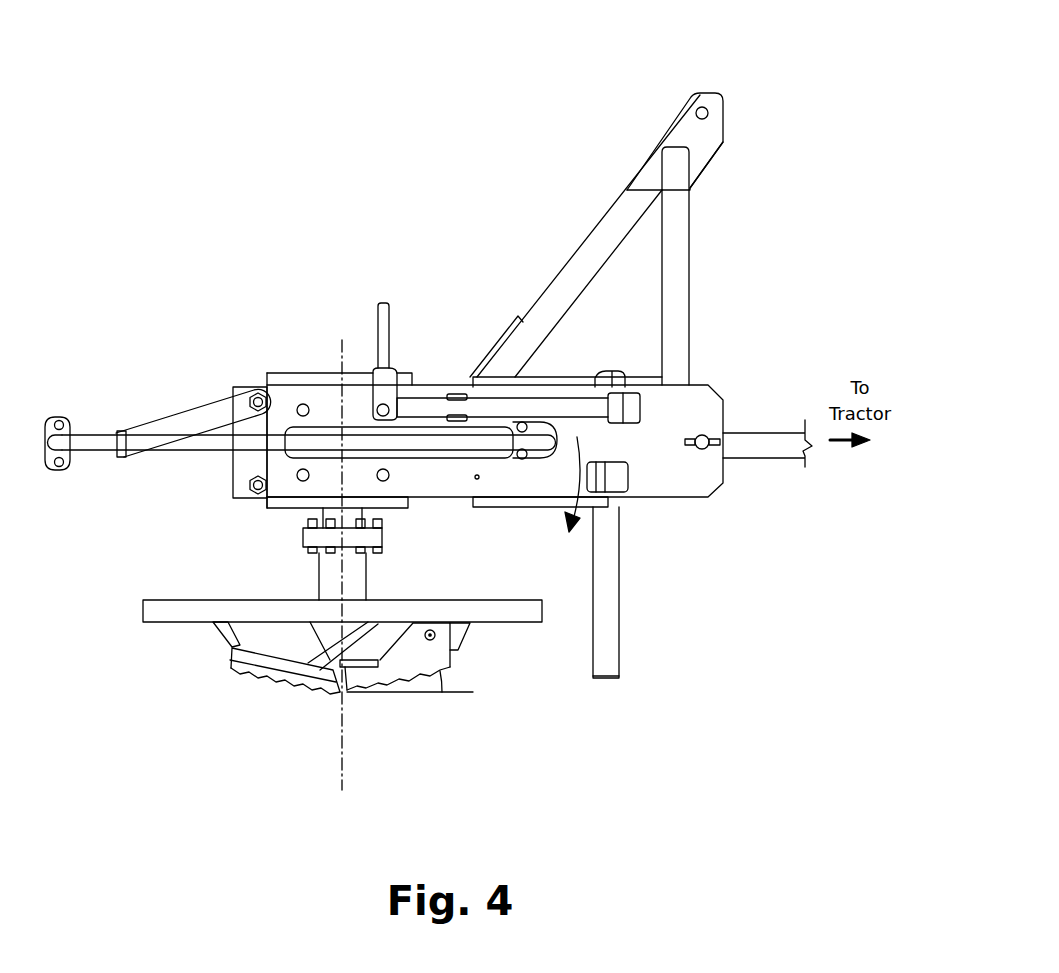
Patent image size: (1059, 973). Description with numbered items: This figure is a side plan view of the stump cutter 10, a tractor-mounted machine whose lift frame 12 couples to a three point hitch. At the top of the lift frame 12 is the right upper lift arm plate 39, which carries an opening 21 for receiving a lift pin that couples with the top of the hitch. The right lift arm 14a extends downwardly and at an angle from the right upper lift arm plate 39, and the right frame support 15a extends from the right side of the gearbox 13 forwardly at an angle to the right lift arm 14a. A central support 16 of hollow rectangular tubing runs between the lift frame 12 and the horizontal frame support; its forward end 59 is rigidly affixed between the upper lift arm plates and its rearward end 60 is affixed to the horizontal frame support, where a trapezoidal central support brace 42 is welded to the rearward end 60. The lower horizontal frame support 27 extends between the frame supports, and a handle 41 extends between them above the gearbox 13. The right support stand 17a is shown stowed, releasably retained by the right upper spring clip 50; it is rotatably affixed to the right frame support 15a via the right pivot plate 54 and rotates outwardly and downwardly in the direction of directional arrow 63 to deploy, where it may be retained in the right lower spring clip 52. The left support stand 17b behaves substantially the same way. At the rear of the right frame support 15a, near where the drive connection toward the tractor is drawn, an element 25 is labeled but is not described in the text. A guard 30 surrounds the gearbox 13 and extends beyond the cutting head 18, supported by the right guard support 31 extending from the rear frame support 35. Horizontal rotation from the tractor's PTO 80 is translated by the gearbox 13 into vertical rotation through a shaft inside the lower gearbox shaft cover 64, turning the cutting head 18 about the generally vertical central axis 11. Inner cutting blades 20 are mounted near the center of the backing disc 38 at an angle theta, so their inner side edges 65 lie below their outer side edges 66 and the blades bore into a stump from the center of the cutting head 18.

The stump cutter 10 is at (701, 50).
The central axis 11 is at (343, 770).
The lift frame 12 is at (727, 125).
The gearbox 13 is at (380, 508).
The right lift arm 14a is at (680, 265).
The right frame support 15a is at (683, 480).
The central support 16 is at (585, 255).
The right support stand 17a is at (402, 408).
The left support stand 17b is at (610, 642).
The cutting head 18 is at (147, 628).
The inner cutting blade 20 is at (283, 685).
The opening 21 is at (705, 107).
The pin 25 is at (705, 437).
The lower horizontal frame support 27 is at (553, 502).
The guard 30 is at (90, 432).
The right guard support 31 is at (220, 393).
The rear frame support 35 is at (240, 482).
The backing disc 38 is at (440, 602).
The right upper lift arm plate 39 is at (697, 155).
The handle 41 is at (383, 303).
The central support brace 42 is at (502, 345).
The right upper spring clip 50 is at (462, 396).
The right lower spring clip 52 is at (618, 475).
The right pivot plate 54 is at (632, 410).
The forward end 59 is at (630, 200).
The rearward end 60 is at (526, 372).
The directional arrow 63 is at (567, 490).
The lower gearbox shaft cover 64 is at (323, 513).
The inner side edge 65 is at (340, 688).
The outer side edge 66 is at (232, 665).
The PTO 80 is at (765, 433).